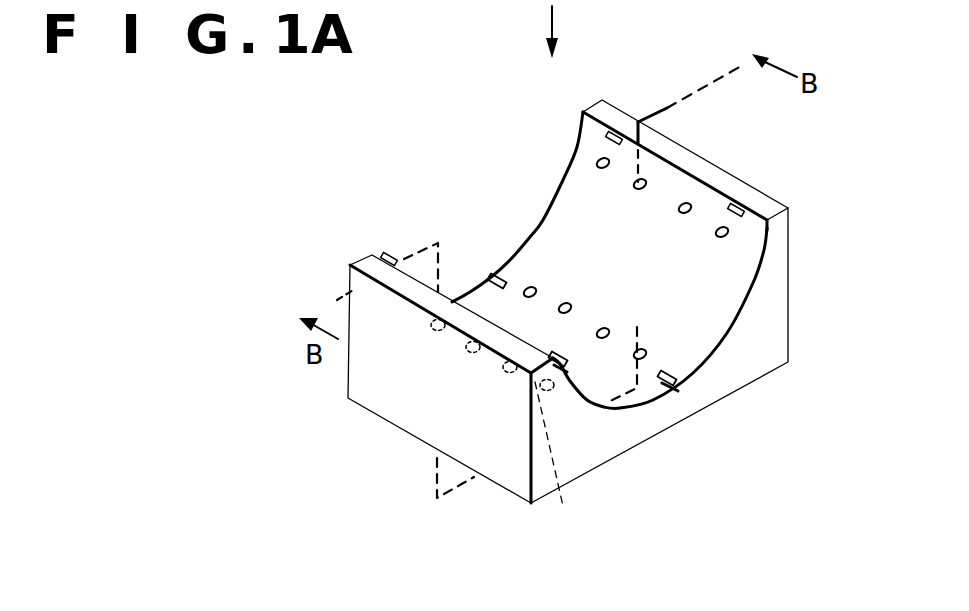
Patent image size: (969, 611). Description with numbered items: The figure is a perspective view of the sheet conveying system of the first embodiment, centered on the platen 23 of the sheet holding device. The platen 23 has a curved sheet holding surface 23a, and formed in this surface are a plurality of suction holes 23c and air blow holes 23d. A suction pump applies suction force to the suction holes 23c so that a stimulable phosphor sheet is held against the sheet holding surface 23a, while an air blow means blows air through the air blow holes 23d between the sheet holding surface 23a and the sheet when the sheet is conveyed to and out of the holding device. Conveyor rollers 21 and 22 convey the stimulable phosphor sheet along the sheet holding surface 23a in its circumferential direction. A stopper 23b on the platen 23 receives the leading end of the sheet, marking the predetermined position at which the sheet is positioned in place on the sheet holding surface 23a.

The conveyor roller 21 is at (585, 357).
The conveyor roller 22 is at (665, 386).
The platen 23 is at (786, 240).
The sheet holding surface 23a is at (752, 252).
The stopper 23b is at (637, 130).
The suction holes 23c is at (686, 204).
The air blow holes 23d is at (566, 302).